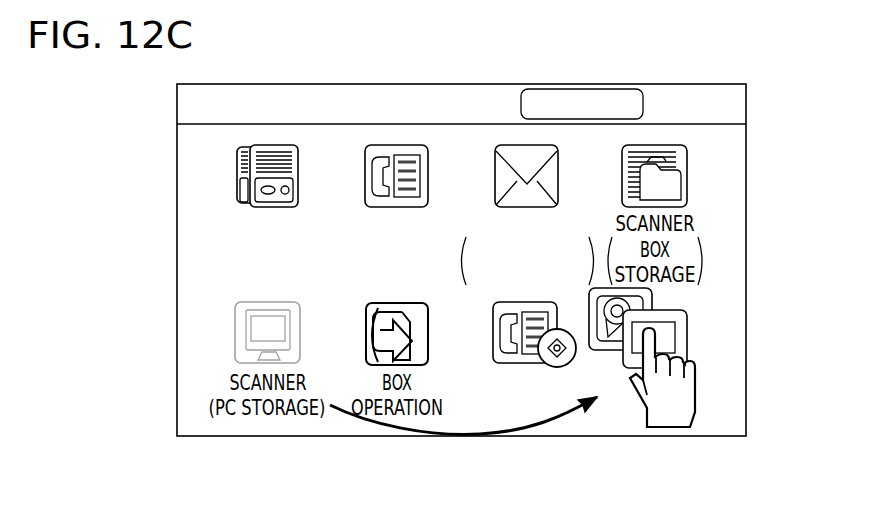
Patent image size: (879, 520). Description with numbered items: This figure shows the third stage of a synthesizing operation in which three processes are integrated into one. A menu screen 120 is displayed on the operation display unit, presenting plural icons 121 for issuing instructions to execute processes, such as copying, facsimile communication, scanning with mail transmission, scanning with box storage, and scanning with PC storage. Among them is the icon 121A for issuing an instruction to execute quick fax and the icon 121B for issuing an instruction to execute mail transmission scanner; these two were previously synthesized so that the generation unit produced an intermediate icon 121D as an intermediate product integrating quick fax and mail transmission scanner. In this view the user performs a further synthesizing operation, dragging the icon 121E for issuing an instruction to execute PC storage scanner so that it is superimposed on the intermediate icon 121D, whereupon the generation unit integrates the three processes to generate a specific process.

The menu screen 120 is at (746, 153).
The icons 121 is at (397, 145).
The icon for quick fax 121A is at (493, 302).
The icon for mail transmission scanner 121B is at (515, 145).
The intermediate icon 121D is at (652, 296).
The icon for PC storage scanner 121E is at (687, 343).